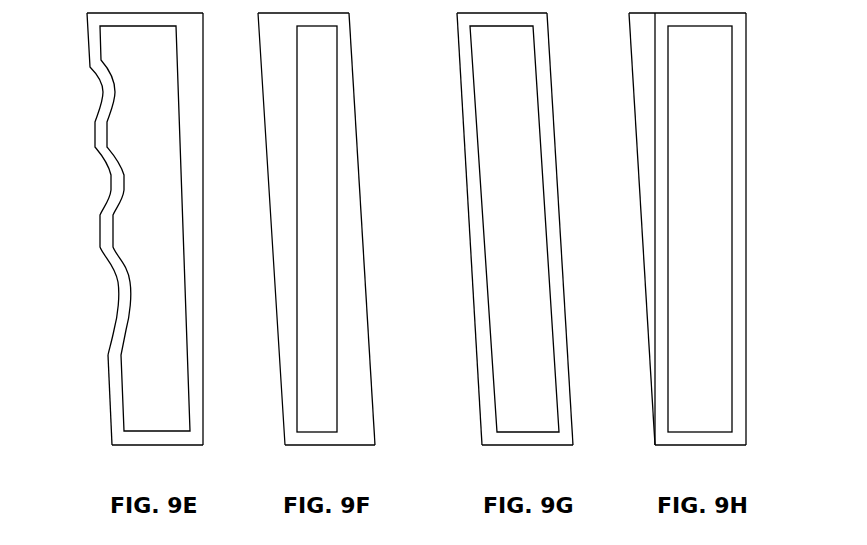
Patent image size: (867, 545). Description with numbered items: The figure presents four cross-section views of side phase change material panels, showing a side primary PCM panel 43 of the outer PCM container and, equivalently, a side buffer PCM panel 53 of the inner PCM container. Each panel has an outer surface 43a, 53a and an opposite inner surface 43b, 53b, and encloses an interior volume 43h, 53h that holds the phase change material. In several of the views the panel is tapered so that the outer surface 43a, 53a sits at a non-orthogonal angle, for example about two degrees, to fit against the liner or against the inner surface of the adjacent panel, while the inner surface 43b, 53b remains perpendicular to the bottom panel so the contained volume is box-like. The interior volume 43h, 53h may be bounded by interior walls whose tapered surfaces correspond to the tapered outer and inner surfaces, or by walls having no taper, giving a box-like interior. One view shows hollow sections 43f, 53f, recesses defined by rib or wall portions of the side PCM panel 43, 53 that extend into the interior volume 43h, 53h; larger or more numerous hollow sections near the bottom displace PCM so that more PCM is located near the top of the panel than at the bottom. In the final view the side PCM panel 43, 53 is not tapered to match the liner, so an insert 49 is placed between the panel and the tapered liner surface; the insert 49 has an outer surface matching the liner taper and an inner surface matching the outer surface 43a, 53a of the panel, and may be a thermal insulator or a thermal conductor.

In FIG. 9E, the side primary PCM panel 43 is at (146, 268).
In FIG. 9F, the side primary PCM panel 43 is at (326, 268).
In FIG. 9G, the side primary PCM panel 43 is at (529, 268).
In FIG. 9H, the side primary PCM panel 43 is at (699, 268).
In FIG. 9E, the side buffer PCM panel 53 is at (146, 268).
In FIG. 9F, the side buffer PCM panel 53 is at (326, 268).
In FIG. 9G, the side buffer PCM panel 53 is at (529, 268).
In FIG. 9H, the side buffer PCM panel 53 is at (699, 268).
In FIG. 9E, the outer surface 43a is at (70, 412).
In FIG. 9F, the outer surface 43a is at (245, 229).
In FIG. 9G, the outer surface 43a is at (446, 237).
In FIG. 9H, the outer surface 43a is at (616, 229).
In FIG. 9E, the outer surface 53a is at (108, 390).
In FIG. 9F, the outer surface 53a is at (276, 305).
In FIG. 9G, the outer surface 53a is at (479, 400).
In FIG. 9H, the outer surface 53a is at (653, 340).
In FIG. 9E, the inner surface 43b is at (243, 241).
In FIG. 9F, the inner surface 43b is at (398, 229).
In FIG. 9G, the inner surface 43b is at (598, 237).
In FIG. 9H, the inner surface 43b is at (783, 229).
In FIG. 9E, the inner surface 53b is at (203, 390).
In FIG. 9F, the inner surface 53b is at (367, 304).
In FIG. 9G, the inner surface 53b is at (570, 400).
In FIG. 9H, the inner surface 53b is at (747, 338).
In FIG. 9E, the interior volume 43h is at (145, 228).
In FIG. 9F, the interior volume 43h is at (317, 229).
In FIG. 9G, the interior volume 43h is at (514, 229).
In FIG. 9H, the interior volume 43h is at (700, 229).
In FIG. 9E, the interior volume 53h is at (145, 228).
In FIG. 9F, the interior volume 53h is at (317, 229).
In FIG. 9G, the interior volume 53h is at (514, 229).
In FIG. 9H, the interior volume 53h is at (700, 229).
In FIG. 9E, the hollow section 43f is at (63, 184).
In FIG. 9E, the hollow section 53f is at (96, 297).
In FIG. 9H, the insert 49 is at (633, 87).